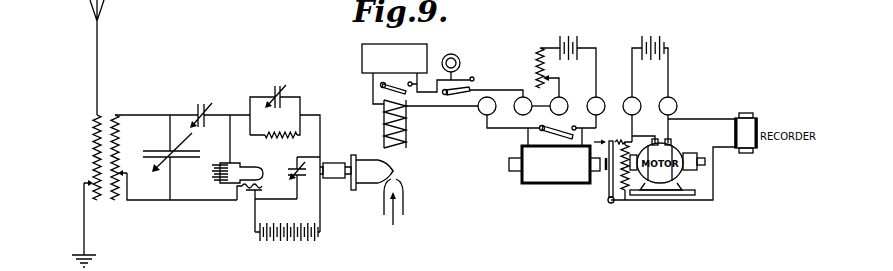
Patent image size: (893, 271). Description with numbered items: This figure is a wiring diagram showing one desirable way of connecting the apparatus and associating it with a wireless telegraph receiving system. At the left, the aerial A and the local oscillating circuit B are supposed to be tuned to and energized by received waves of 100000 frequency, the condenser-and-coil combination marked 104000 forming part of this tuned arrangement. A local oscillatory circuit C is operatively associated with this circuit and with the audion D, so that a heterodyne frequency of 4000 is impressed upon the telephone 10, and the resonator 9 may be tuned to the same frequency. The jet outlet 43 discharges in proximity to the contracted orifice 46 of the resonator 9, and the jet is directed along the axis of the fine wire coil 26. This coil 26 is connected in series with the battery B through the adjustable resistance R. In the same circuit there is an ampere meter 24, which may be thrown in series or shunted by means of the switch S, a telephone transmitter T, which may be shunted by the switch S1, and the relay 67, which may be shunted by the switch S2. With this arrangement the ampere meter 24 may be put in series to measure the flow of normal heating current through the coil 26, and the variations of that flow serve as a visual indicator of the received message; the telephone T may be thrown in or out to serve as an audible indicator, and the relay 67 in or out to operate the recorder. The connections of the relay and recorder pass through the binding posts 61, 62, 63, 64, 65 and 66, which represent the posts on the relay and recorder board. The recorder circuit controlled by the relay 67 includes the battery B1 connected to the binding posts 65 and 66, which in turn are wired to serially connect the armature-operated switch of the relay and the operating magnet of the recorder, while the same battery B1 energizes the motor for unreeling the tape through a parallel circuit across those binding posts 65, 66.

The aerial A is at (87, 56).
The received wave frequency 100000 is at (99, 106).
The battery B is at (568, 38).
The tuned circuit box 104000 is at (260, 109).
The local oscillatory circuit C is at (310, 161).
The audion D is at (254, 173).
The heterodyne frequency 4000 is at (342, 171).
The telephone 10 is at (348, 153).
The resonator 9 is at (372, 182).
The contracted orifice 46 is at (396, 170).
The jet outlet 43 is at (406, 202).
The ampere meter 24 is at (362, 60).
The fine wire coil 26 is at (408, 125).
The switch S is at (416, 83).
The telephone transmitter T is at (458, 67).
The switch S1 is at (483, 84).
The switch S2 is at (562, 130).
The adjustable resistance R is at (539, 68).
The battery B1 is at (653, 38).
The binding post 61 is at (508, 112).
The binding post 62 is at (532, 106).
The binding post 63 is at (555, 95).
The binding post 64 is at (591, 88).
The binding post 65 is at (632, 95).
The binding post 66 is at (697, 95).
The relay 67 is at (554, 175).